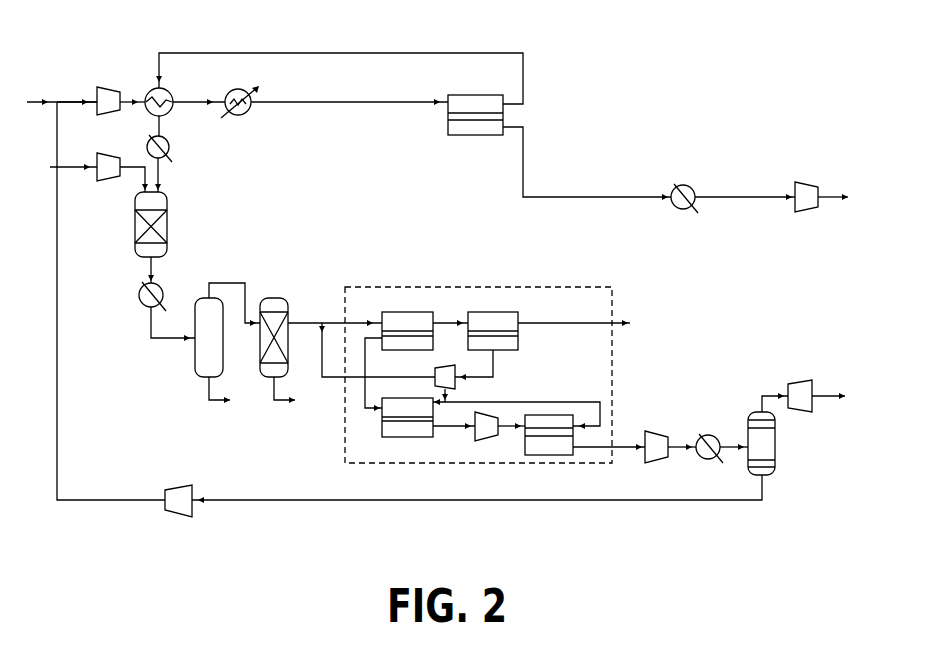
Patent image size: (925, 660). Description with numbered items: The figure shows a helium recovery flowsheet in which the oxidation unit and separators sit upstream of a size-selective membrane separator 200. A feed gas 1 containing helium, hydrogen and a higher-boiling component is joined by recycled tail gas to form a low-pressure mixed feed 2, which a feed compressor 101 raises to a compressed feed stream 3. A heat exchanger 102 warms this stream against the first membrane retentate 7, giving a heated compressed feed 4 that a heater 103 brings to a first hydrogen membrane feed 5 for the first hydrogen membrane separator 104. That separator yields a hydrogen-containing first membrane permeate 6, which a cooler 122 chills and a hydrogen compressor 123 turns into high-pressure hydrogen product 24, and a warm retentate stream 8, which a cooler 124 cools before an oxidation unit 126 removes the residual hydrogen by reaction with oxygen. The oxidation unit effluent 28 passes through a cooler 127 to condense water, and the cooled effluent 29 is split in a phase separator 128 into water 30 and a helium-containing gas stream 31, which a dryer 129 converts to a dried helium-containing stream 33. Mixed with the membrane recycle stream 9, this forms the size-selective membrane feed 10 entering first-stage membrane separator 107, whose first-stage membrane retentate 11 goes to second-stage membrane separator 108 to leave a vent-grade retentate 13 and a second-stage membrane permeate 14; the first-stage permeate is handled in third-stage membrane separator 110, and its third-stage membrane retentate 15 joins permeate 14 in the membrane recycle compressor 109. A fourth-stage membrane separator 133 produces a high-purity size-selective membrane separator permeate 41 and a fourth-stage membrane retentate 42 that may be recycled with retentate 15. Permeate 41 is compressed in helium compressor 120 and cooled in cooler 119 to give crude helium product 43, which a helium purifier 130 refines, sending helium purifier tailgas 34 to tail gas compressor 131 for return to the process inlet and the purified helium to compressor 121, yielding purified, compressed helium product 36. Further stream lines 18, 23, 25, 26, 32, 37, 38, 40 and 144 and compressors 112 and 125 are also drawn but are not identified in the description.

The feed gas 1 is at (62, 94).
The low-pressure mixed feed 2 is at (77, 94).
The compressed feed stream 3 is at (132, 94).
The heated compressed feed 4 is at (199, 94).
The first hydrogen membrane feed 5 is at (151, 126).
The first membrane permeate 6 is at (587, 163).
The first membrane retentate 7 is at (339, 69).
The warm retentate stream 8 is at (349, 95).
The membrane recycle stream 9 is at (371, 350).
The size-selective membrane feed 10 is at (352, 315).
The first-stage membrane retentate 11 is at (450, 315).
The size-selective membrane separator retentate 13 is at (574, 315).
The second-stage membrane permeate 14 is at (483, 365).
The third-stage membrane retentate 15 is at (448, 404).
The stream to compressor 18 is at (454, 432).
The cooled effluent stream 23 is at (745, 190).
The high-pressure hydrogen product 24 is at (833, 190).
The expanded overhead stream 25 is at (828, 389).
The cooled stream to separator 26 is at (167, 175).
The oxidation unit effluent 28 is at (140, 270).
The cooled effluent 29 is at (173, 324).
The water 30 is at (219, 402).
The gas stream containing helium 31 is at (234, 297).
The liquid stream 32 is at (284, 402).
The dried helium-containing stream 33 is at (305, 314).
The helium purifier tailgas 34 is at (488, 489).
The purified, compressed helium product 36 is at (111, 301).
The recycle stream 37 is at (73, 159).
The overhead stream 38 is at (134, 179).
The compressed stream 40 is at (511, 436).
The size-selective membrane separator permeate 41 is at (609, 441).
The fourth-stage membrane retentate 42 is at (522, 407).
The crude helium product 43 is at (734, 439).
The feed compressor 101 is at (108, 101).
The heat exchanger 102 is at (164, 109).
The heater 103 is at (246, 108).
The first hydrogen membrane separator 104 is at (475, 115).
The first-stage membrane separator 107 is at (407, 331).
The second-stage membrane separator 108 is at (493, 331).
The membrane recycle compressor 109 is at (445, 377).
The third-stage membrane separator 110 is at (407, 417).
The compressor 112 is at (486, 426).
The cooler 119 is at (695, 455).
The helium compressor 120 is at (656, 447).
The compressor 121 is at (786, 394).
The cooler 122 is at (679, 203).
The hydrogen compressor 123 is at (806, 197).
The cooler 124 is at (170, 148).
The compressor 125 is at (108, 167).
The oxidation unit 126 is at (151, 224).
The cooler 127 is at (143, 305).
The phase separator 128 is at (209, 337).
The dryer 129 is at (264, 337).
The helium purifier 130 is at (761, 443).
The tail gas compressor 131 is at (178, 501).
The fourth-stage membrane separator 133 is at (549, 435).
The recycle stream 144 is at (364, 374).
The size-selective membrane separator 200 is at (478, 375).